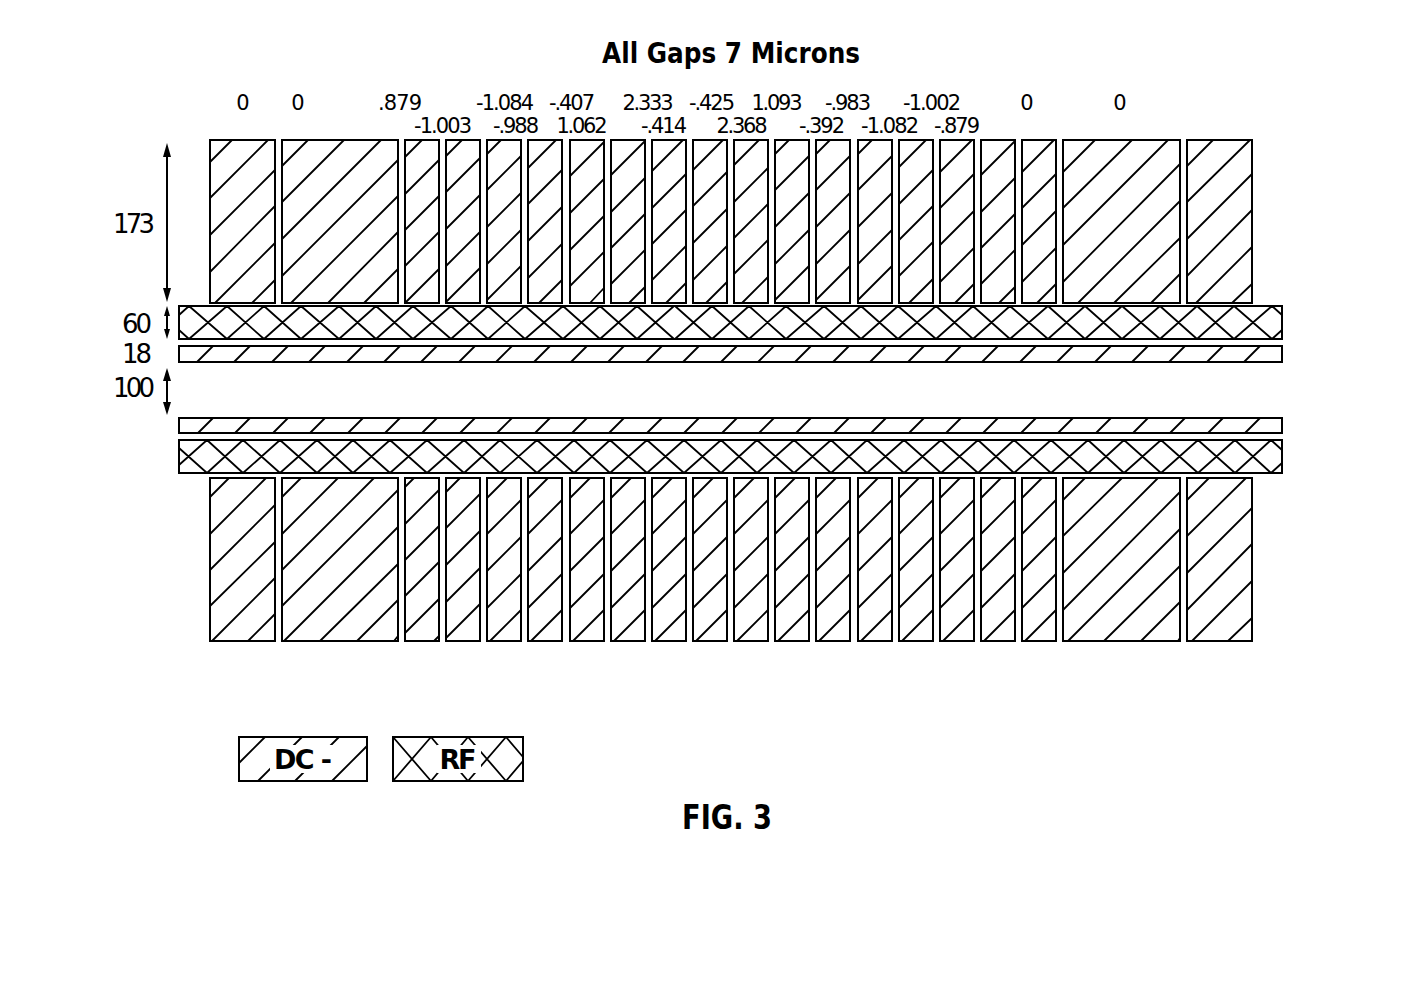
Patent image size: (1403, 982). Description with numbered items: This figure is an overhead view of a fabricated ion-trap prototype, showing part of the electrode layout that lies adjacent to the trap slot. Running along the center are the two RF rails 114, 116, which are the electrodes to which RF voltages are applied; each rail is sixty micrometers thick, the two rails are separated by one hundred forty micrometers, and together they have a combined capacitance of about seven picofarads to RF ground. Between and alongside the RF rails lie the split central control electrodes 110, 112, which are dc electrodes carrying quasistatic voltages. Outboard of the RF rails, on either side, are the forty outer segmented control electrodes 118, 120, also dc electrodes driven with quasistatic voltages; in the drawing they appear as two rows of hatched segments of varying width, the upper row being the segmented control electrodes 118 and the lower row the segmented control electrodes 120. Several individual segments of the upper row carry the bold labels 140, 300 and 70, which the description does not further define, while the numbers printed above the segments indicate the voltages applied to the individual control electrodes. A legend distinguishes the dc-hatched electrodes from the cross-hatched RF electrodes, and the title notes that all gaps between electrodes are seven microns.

The outer segmented control electrodes 118 is at (773, 221).
The outer segmented control electrodes 120 is at (1264, 568).
The RF rail 114 is at (1283, 320).
The split central control electrode 110 is at (1283, 350).
The split central control electrode 112 is at (1283, 422).
The RF rail 116 is at (1283, 462).
The DC electrode (140 micron) 140 is at (242, 221).
The DC electrode (300 micron) 300 is at (340, 221).
The DC electrode (70 micron) 70 is at (422, 221).